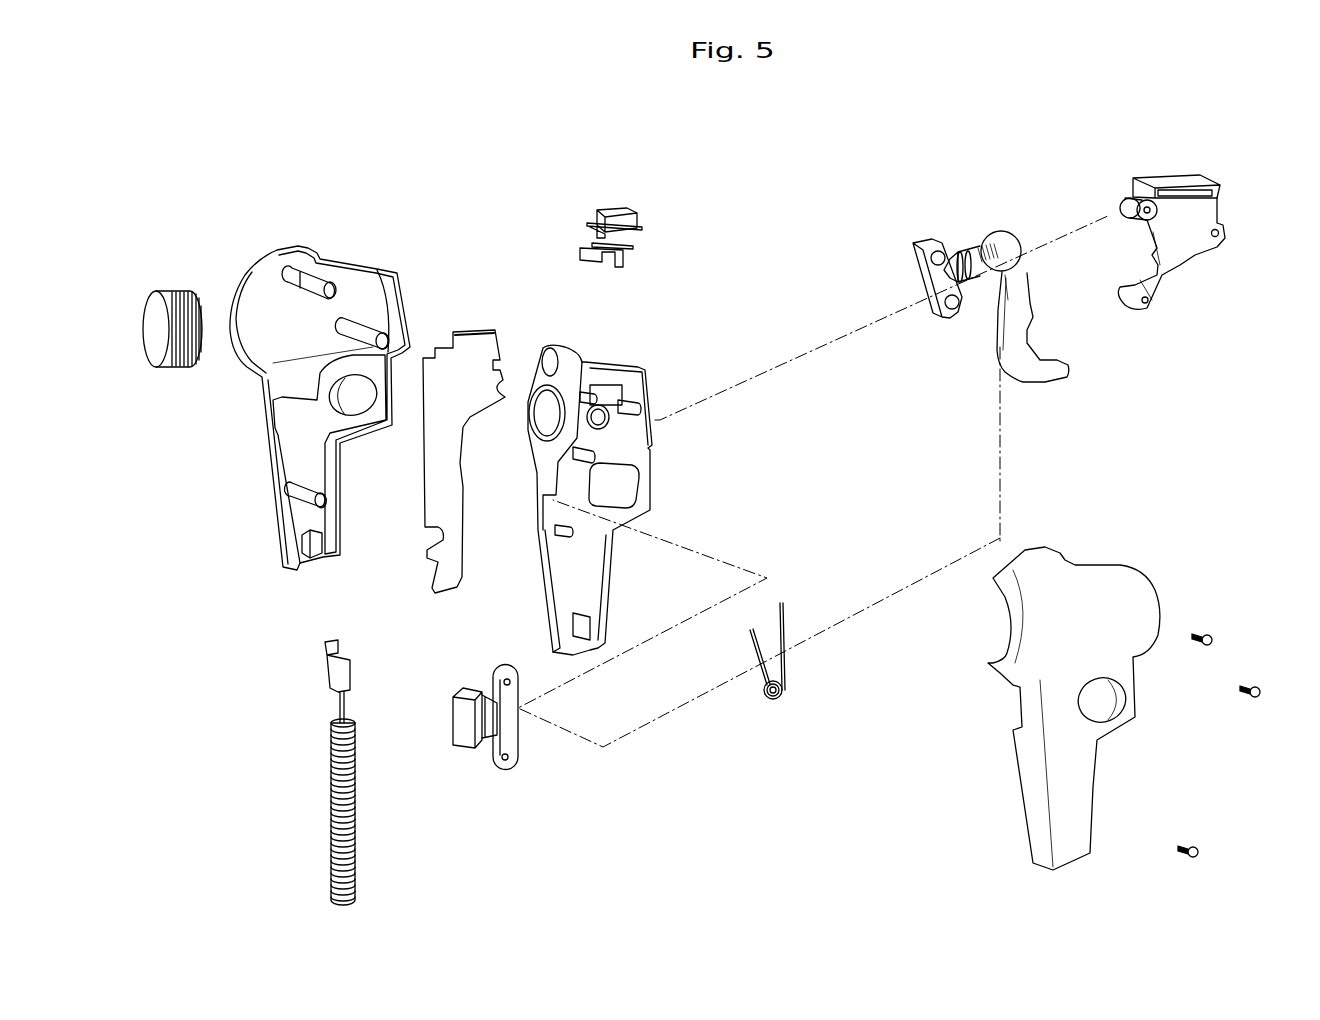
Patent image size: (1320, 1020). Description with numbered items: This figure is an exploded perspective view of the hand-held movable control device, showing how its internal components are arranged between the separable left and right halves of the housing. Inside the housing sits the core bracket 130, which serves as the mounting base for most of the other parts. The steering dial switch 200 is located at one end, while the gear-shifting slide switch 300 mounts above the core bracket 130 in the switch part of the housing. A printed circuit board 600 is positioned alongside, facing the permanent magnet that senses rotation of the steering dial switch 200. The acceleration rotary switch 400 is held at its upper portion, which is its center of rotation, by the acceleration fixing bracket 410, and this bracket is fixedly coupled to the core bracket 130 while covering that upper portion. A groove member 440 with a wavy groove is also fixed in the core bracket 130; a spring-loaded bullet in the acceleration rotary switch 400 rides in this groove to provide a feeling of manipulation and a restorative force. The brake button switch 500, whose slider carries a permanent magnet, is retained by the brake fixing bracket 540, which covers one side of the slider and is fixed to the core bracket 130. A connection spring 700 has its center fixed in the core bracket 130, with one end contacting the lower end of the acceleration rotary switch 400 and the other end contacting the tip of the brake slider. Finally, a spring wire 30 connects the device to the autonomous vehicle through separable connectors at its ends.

The spring wire 30 is at (353, 878).
The core bracket 130 is at (632, 373).
The steering dial switch 200 is at (180, 302).
The gear-shifting slide switch 300 is at (613, 210).
The acceleration rotary switch 400 is at (1038, 372).
The acceleration fixing bracket 410 is at (1182, 248).
The groove member 440 is at (917, 260).
The brake button switch 500 is at (453, 748).
The brake fixing bracket 540 is at (510, 753).
The printed circuit board 600 is at (478, 347).
The connection spring 700 is at (764, 700).